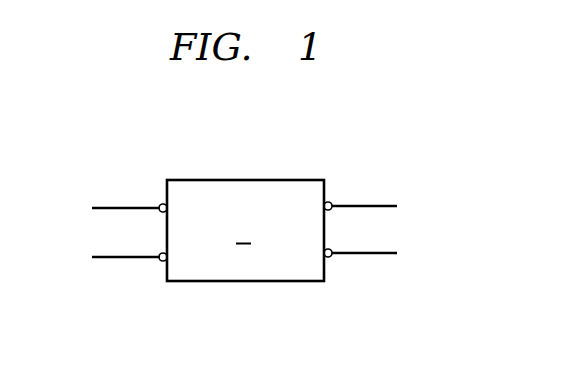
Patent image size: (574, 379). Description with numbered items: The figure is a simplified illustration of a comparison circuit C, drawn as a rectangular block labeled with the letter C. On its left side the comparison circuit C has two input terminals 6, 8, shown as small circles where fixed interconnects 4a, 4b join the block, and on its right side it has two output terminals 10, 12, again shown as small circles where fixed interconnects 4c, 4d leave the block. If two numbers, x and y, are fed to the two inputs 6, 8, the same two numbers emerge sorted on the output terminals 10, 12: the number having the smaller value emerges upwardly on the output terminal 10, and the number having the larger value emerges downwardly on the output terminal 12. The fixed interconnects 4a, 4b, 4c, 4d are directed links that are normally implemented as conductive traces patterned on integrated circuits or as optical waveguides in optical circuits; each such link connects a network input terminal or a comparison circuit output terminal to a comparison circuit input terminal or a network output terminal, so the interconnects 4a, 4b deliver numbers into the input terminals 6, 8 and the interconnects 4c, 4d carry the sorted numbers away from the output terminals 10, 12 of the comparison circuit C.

The comparison circuit C is at (245, 230).
The fixed interconnect 4a is at (101, 205).
The fixed interconnect 4b is at (96, 258).
The fixed interconnect 4c is at (395, 202).
The fixed interconnect 4d is at (390, 255).
The input terminal 6 is at (159, 203).
The input terminal 8 is at (160, 262).
The output terminal 10 is at (332, 197).
The output terminal 12 is at (330, 262).